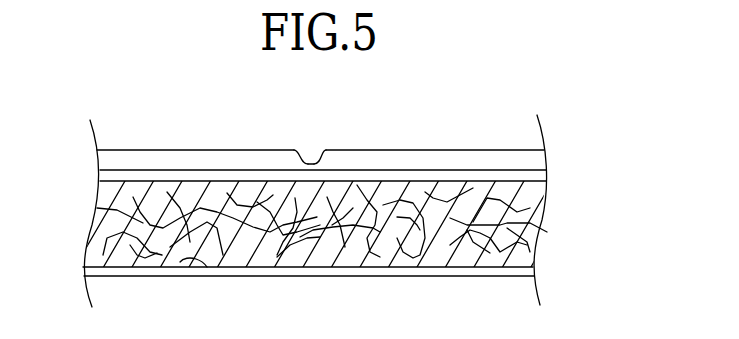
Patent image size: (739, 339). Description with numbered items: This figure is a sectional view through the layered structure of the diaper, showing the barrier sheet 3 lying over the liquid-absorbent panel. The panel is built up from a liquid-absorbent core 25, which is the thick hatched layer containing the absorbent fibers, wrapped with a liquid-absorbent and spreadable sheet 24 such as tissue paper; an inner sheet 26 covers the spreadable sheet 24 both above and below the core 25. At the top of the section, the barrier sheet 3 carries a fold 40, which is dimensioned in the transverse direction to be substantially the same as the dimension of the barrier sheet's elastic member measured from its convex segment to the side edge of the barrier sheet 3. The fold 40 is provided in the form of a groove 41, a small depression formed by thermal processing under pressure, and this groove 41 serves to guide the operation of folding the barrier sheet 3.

The barrier sheet 3 is at (462, 150).
The liquid-absorbent and spreadable sheet 24 is at (180, 262).
The liquid-absorbent core 25 is at (507, 222).
The inner sheet 26 is at (130, 172).
The fold 40 is at (331, 130).
The groove 41 is at (312, 162).